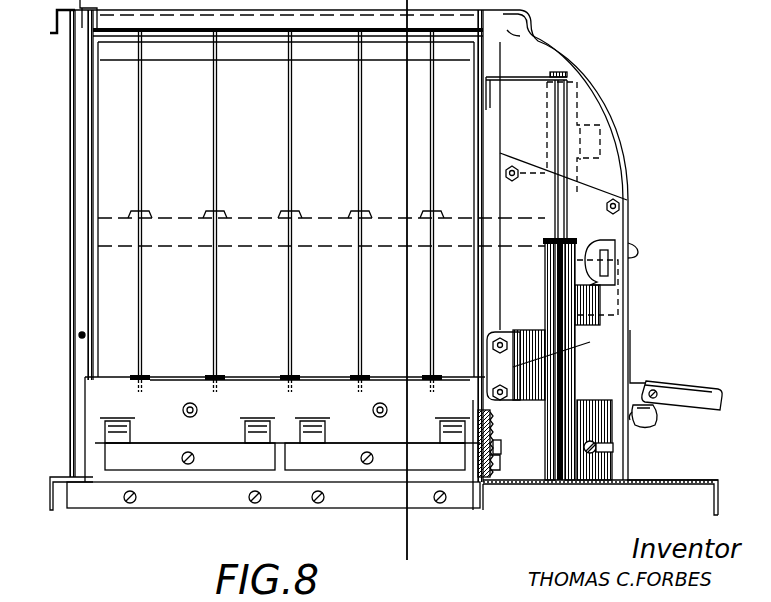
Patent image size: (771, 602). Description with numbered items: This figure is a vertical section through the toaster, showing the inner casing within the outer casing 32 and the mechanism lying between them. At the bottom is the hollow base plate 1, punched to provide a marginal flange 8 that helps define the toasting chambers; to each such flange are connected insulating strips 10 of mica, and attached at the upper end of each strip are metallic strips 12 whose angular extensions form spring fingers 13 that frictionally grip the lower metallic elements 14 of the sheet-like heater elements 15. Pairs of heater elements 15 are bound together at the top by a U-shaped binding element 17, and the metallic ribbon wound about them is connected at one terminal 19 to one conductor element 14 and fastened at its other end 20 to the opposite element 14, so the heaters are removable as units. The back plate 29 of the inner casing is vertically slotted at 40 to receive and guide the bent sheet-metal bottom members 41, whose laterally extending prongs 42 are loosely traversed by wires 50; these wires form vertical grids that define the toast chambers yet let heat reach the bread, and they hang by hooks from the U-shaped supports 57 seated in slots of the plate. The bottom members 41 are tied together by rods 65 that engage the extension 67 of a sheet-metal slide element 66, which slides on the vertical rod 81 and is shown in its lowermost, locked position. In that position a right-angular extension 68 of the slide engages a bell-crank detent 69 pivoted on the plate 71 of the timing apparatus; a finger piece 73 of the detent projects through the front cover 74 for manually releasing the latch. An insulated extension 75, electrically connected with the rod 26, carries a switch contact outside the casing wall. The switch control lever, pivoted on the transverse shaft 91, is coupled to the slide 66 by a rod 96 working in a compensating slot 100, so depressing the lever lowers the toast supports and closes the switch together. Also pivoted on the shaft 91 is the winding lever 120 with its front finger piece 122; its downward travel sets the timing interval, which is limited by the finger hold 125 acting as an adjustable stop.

The base plate 1 is at (672, 483).
The marginal flange 8 is at (500, 510).
The insulating strip 10 is at (380, 548).
The metallic strip 12 is at (214, 462).
The spring finger 13 is at (118, 420).
The lower metallic element 14 is at (233, 392).
The sheet-like heater element 15 is at (107, 87).
The U-shaped metallic binding element 17 is at (257, 44).
The ribbon terminal connection 19 is at (186, 418).
The ribbon terminal connection 20 is at (378, 418).
The rod 26 is at (500, 446).
The back plate 29 is at (90, 170).
The outer casing 32 is at (70, 140).
The vertical slot 40 is at (92, 278).
The translatable bottom member 41 is at (246, 212).
The prong 42 is at (345, 210).
The wire 50 is at (213, 123).
The support 57 is at (357, 0).
The rod 65 is at (497, 388).
The slide element 66 is at (575, 195).
The extension 67 is at (525, 366).
The right-angular extension 68 is at (600, 128).
The detent 69 is at (605, 275).
The plate 71 is at (615, 238).
The finger piece 73 is at (636, 250).
The front cover 74 is at (610, 112).
The extension 75 is at (498, 468).
The vertical rod 81 is at (567, 150).
The shaft 91 is at (80, 335).
The rod 96 is at (592, 455).
The slot 100 is at (608, 453).
The winding element 120 is at (633, 388).
The finger piece 122 is at (688, 382).
The finger hold 125 is at (658, 418).